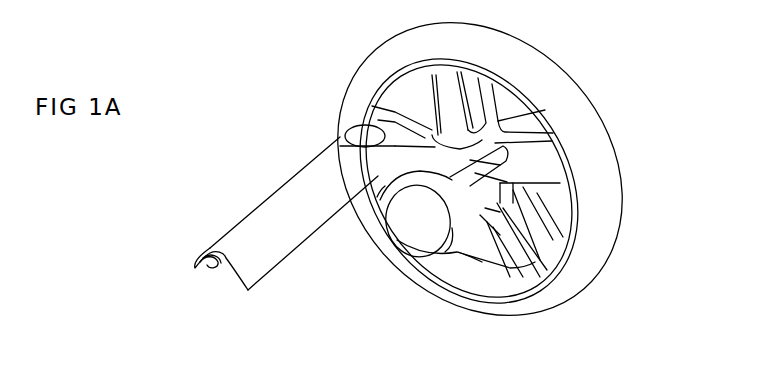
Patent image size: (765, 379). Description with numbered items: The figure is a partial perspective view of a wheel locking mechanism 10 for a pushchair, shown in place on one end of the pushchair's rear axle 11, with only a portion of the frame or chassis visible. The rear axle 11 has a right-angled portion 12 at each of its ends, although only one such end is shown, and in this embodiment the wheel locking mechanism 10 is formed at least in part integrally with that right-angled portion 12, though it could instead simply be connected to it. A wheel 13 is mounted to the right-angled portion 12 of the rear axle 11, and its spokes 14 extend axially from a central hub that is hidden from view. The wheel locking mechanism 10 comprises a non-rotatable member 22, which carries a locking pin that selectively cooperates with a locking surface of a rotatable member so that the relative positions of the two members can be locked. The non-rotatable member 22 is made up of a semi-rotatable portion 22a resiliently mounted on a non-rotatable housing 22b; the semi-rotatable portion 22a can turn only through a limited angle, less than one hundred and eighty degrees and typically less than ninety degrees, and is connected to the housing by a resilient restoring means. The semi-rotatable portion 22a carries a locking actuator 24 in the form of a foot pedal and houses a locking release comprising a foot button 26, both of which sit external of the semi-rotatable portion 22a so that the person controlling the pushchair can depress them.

The wheel locking mechanism 10 is at (420, 160).
The rear axle 11 is at (270, 215).
The right-angled portion 12 is at (400, 157).
The wheel 13 is at (508, 60).
The spokes 14 is at (538, 150).
The non-rotatable member 22 is at (485, 215).
The semi-rotatable portion 22a is at (487, 205).
The non-rotatable housing 22b is at (485, 208).
The locking actuator 24 is at (500, 183).
The foot button 26 is at (387, 180).